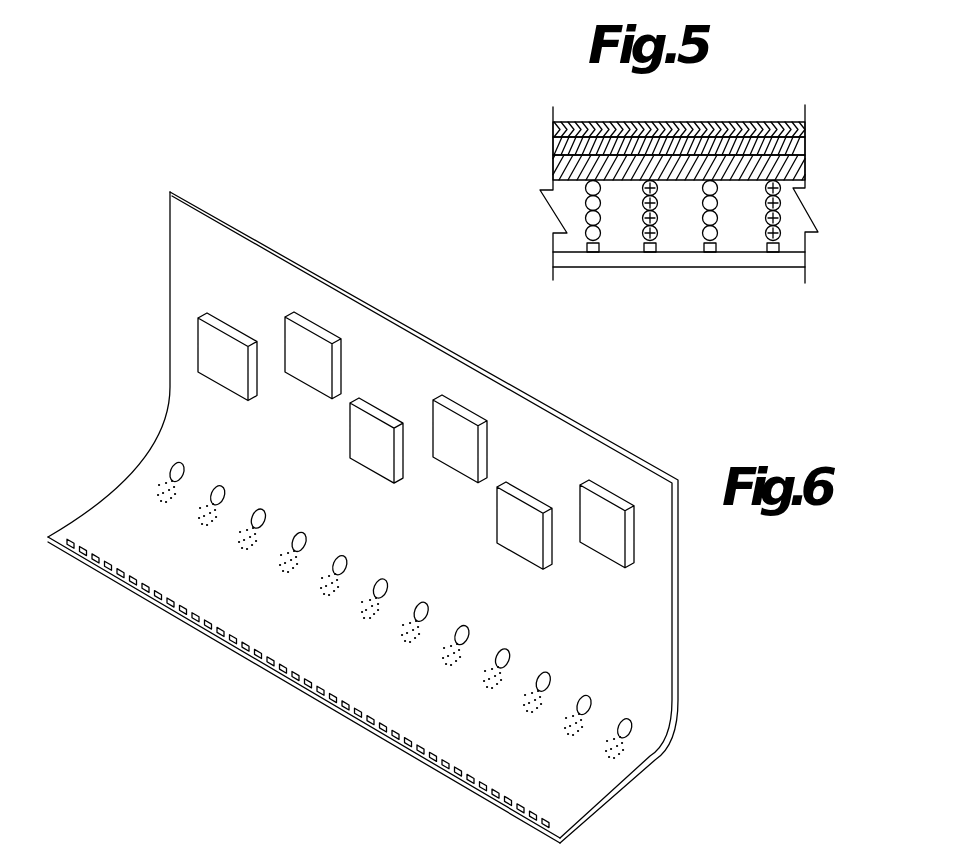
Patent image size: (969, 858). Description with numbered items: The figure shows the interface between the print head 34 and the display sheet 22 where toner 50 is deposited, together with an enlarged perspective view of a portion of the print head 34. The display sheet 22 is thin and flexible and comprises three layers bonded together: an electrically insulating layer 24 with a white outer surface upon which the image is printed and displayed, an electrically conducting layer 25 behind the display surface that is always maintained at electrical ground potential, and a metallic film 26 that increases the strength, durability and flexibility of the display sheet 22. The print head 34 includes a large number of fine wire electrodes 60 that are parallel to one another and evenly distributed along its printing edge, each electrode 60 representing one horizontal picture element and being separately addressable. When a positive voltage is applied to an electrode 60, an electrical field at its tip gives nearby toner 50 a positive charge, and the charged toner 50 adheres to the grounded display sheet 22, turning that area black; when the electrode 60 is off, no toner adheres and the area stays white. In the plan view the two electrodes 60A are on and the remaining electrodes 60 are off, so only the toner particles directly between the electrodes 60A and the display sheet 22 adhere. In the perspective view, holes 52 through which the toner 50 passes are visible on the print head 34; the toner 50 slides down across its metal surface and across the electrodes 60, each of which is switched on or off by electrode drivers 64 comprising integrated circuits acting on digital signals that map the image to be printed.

In FIG. 5, the display sheet 22 is at (818, 122).
In FIG. 5, the electrically insulating layer 24 is at (553, 168).
In FIG. 5, the electrically conducting layer 25 is at (553, 146).
In FIG. 5, the metallic film 26 is at (566, 115).
In FIG. 5, the print head 34 is at (645, 268).
In FIG. 6, the print head 34 is at (238, 212).
In FIG. 5, the toner 50 is at (644, 190).
In FIG. 6, the toner 50 is at (270, 568).
In FIG. 6, the holes 52 is at (180, 462).
In FIG. 5, the fine wire electrodes 60 is at (584, 253).
In FIG. 6, the fine wire electrodes 60 is at (132, 587).
In FIG. 5, the turned-on electrodes 60A is at (663, 253).
In FIG. 6, the electrode drivers 64 is at (328, 330).